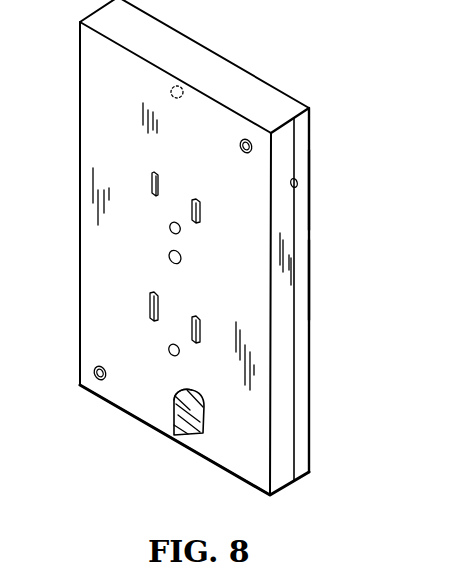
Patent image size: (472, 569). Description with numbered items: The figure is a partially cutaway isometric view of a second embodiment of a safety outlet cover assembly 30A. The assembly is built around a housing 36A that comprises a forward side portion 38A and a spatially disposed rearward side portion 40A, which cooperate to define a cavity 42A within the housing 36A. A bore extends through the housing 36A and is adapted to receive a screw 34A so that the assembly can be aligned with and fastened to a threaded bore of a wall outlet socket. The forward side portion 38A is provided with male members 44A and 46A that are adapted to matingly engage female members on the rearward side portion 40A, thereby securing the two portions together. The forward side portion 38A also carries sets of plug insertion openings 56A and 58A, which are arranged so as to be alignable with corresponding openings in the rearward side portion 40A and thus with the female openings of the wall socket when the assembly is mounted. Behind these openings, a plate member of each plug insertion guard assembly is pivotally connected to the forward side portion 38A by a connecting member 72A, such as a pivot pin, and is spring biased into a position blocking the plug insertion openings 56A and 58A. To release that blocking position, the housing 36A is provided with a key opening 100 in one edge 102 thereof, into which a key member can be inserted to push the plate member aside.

The safety outlet cover assembly 30A is at (333, 75).
The edge 102 is at (286, 148).
The key opening 100 is at (296, 180).
The rearward side portion 40A is at (312, 207).
The housing 36A is at (312, 280).
The forward side portion 38A is at (97, 295).
The male member 44A is at (179, 86).
The connecting member 72A is at (251, 139).
The plug insertion openings 56A is at (172, 223).
The screw 34A is at (168, 259).
The plug insertion openings 58A is at (174, 345).
The cavity 42A is at (194, 431).
The male member 46A is at (188, 412).